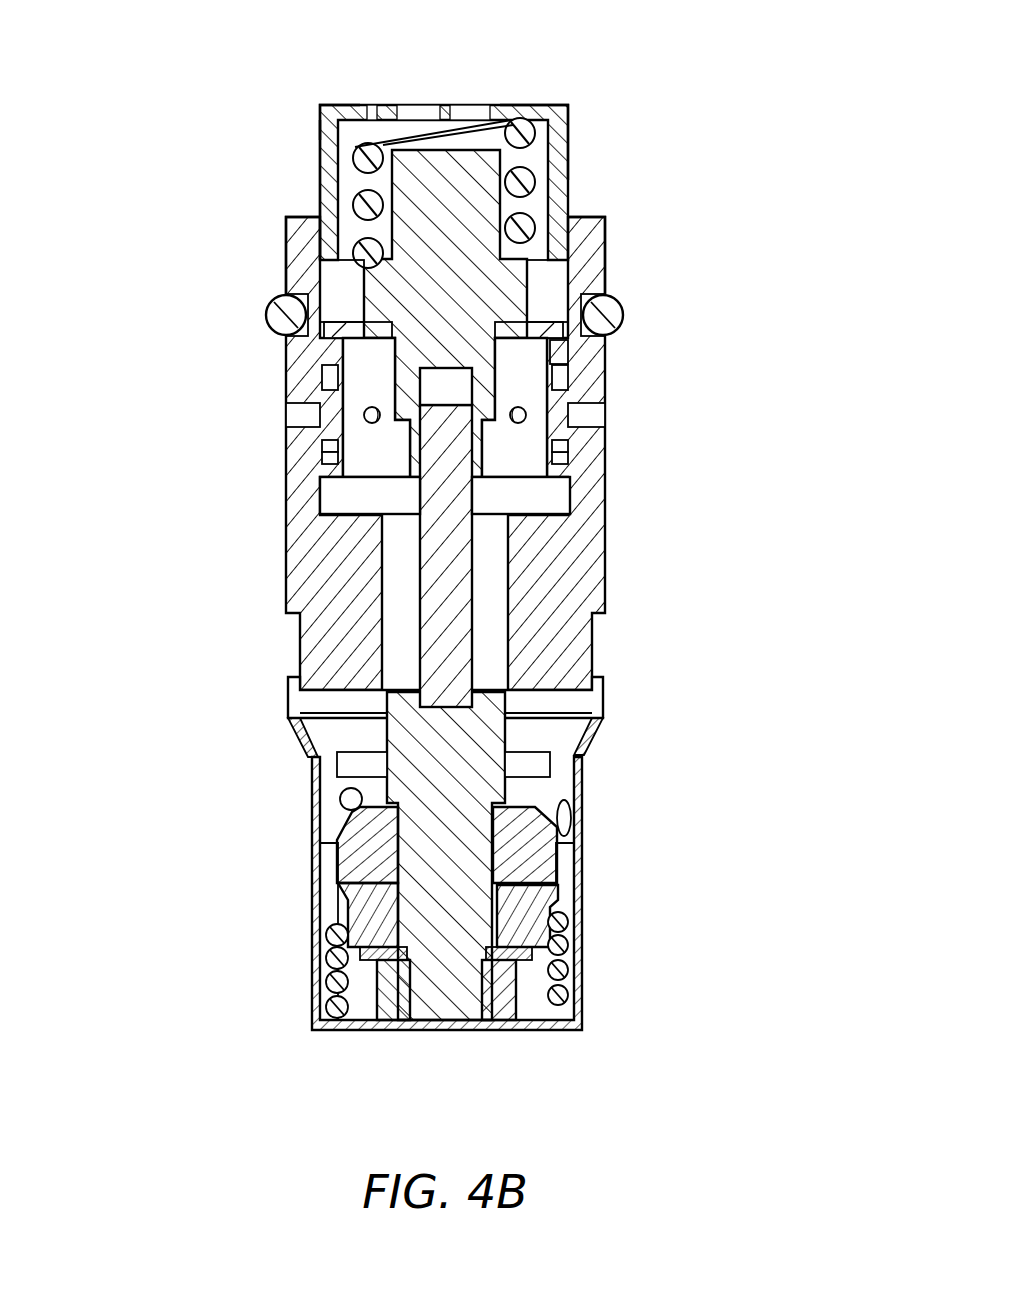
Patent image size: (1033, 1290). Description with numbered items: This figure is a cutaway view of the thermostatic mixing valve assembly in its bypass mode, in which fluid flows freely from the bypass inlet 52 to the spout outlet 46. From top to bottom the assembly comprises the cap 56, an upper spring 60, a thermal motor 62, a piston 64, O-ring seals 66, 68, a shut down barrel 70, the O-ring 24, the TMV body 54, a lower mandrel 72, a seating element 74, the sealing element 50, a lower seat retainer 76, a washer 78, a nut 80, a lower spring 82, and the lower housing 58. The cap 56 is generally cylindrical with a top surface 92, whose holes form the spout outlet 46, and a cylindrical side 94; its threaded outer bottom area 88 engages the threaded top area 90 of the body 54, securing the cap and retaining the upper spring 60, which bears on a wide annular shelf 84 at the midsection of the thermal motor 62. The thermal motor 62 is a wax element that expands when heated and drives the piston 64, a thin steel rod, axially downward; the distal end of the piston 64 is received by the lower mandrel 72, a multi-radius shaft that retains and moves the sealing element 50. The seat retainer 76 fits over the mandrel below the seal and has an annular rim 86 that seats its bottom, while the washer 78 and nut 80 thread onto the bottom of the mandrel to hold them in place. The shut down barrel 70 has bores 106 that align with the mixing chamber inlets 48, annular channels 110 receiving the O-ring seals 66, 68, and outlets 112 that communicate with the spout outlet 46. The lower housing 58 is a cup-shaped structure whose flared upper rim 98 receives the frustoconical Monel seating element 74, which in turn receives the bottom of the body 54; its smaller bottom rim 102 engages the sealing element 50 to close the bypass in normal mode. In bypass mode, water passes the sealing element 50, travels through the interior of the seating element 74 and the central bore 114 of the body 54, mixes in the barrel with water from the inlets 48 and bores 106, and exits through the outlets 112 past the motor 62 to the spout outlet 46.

The O-ring 24 is at (624, 314).
The spout outlet 46 is at (480, 104).
The mixing chamber inlets 48 is at (286, 415).
The sealing element 50 is at (578, 785).
The bypass inlet 52 is at (342, 810).
The TMV body 54 is at (286, 555).
The cap 56 is at (563, 100).
The lower housing 58 is at (558, 1028).
The upper spring 60 is at (548, 165).
The thermal motor 62 is at (568, 258).
The piston 64 is at (415, 560).
The O-ring seal 66 is at (330, 372).
The O-ring seal 68 is at (562, 446).
The shut down barrel 70 is at (560, 352).
The lower mandrel 72 is at (385, 722).
The seating element 74 is at (605, 690).
The lower seat retainer 76 is at (338, 905).
The washer 78 is at (353, 990).
The nut 80 is at (393, 1005).
The lower spring 82 is at (330, 985).
The wide annular shelf 84 is at (333, 268).
The annular rim 86 is at (585, 866).
The threaded outer bottom area 88 is at (333, 240).
The threaded top area 90 is at (300, 225).
The top surface 92 is at (352, 104).
The cylindrical side 94 is at (320, 112).
The flared upper rim 98 is at (600, 722).
The bottom rim 102 is at (320, 765).
The bores 106 is at (330, 455).
The annular channels 110 is at (330, 384).
The outlets 112 is at (510, 291).
The central bore 114 is at (500, 608).